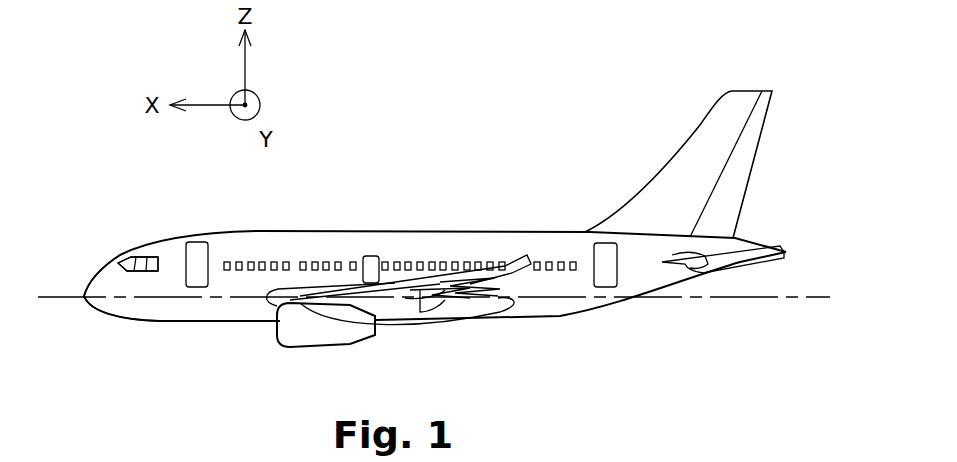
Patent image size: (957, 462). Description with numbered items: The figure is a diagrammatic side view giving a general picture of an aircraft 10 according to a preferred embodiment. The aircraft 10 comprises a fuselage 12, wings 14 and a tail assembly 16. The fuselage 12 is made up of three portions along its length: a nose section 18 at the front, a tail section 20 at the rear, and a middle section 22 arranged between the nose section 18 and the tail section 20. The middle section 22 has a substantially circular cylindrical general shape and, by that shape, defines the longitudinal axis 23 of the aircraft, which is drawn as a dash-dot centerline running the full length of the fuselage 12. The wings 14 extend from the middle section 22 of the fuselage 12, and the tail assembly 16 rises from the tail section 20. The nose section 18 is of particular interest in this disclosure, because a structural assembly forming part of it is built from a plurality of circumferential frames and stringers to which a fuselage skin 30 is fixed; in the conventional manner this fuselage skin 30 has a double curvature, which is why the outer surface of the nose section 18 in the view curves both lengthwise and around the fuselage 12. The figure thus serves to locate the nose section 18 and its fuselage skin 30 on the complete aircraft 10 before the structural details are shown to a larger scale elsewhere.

The aircraft 10 is at (458, 235).
The fuselage 12 is at (456, 245).
The wings 14 is at (403, 290).
The tail assembly 16 is at (732, 173).
The nose section 18 is at (121, 303).
The tail section 20 is at (702, 283).
The middle section 22 is at (383, 255).
The longitudinal axis 23 is at (794, 299).
The fuselage skin 30 is at (220, 303).